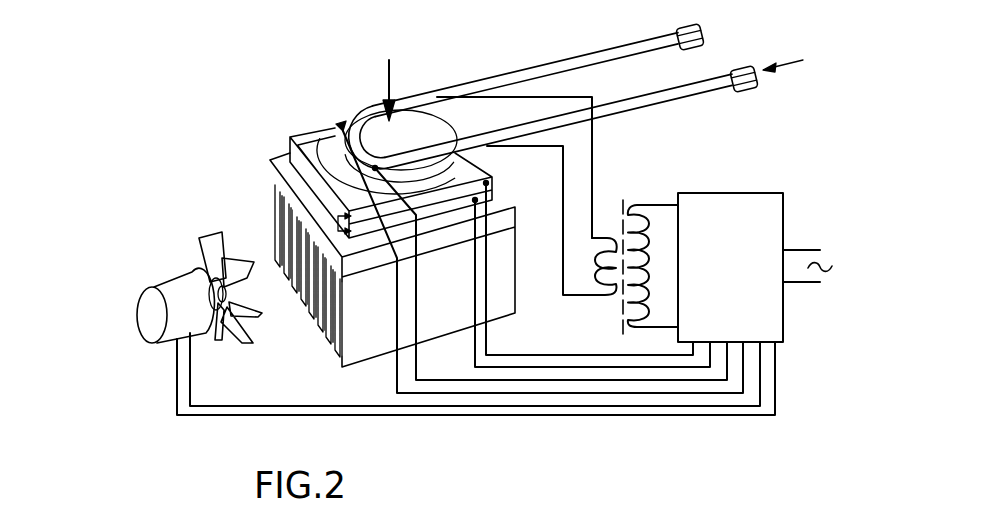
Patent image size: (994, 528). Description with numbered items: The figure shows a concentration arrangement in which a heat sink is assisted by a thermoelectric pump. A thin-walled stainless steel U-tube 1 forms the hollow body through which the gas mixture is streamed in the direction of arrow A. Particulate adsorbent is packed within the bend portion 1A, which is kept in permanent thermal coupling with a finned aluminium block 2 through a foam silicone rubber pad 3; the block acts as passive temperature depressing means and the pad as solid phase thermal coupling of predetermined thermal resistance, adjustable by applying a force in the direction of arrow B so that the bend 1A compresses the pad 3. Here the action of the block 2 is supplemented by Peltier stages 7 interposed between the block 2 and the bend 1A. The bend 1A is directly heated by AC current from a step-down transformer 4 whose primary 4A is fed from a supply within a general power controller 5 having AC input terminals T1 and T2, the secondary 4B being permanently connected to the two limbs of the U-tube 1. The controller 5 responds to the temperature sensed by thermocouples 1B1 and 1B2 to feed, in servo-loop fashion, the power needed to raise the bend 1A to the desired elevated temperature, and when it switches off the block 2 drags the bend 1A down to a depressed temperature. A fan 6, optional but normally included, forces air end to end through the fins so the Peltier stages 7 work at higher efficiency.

The U-tube 1 is at (658, 112).
The bend portion 1A is at (351, 150).
The thermocouple 1B1 is at (375, 167).
The thermocouple 1B2 is at (341, 127).
The finned aluminium block 2 is at (500, 312).
The foam silicone rubber pad 3 is at (443, 112).
The step-down transformer 4 is at (621, 249).
The primary 4A is at (655, 207).
The secondary 4B is at (601, 297).
The power controller 5 is at (774, 203).
The fan 6 is at (168, 290).
The Peltier stages 7 is at (298, 152).
The arrow A is at (783, 52).
The arrow B is at (400, 87).
The AC input terminal T1 is at (814, 294).
The AC input terminal T2 is at (814, 244).